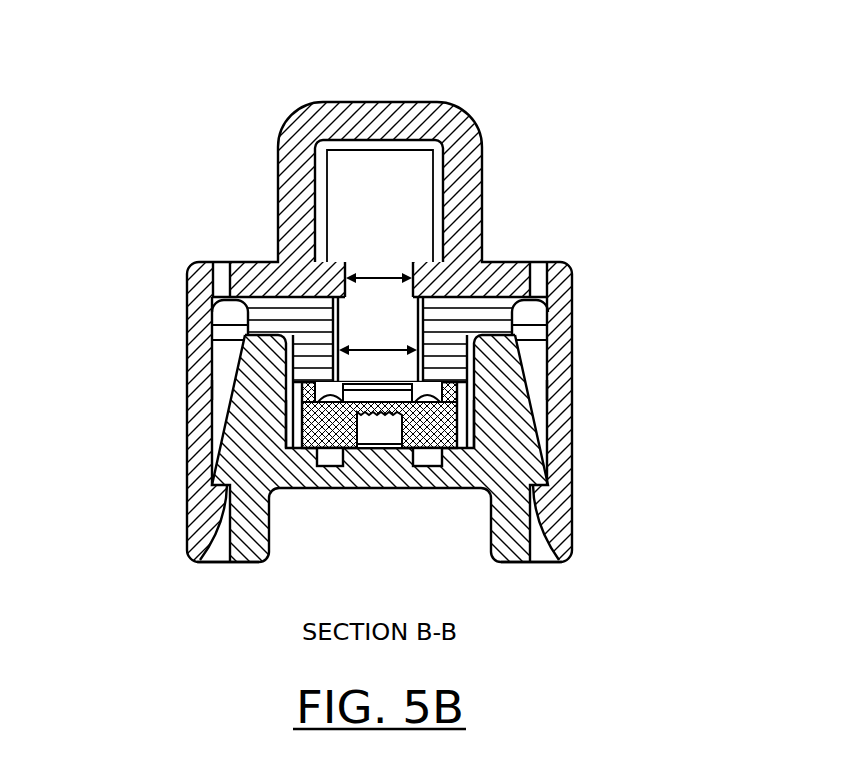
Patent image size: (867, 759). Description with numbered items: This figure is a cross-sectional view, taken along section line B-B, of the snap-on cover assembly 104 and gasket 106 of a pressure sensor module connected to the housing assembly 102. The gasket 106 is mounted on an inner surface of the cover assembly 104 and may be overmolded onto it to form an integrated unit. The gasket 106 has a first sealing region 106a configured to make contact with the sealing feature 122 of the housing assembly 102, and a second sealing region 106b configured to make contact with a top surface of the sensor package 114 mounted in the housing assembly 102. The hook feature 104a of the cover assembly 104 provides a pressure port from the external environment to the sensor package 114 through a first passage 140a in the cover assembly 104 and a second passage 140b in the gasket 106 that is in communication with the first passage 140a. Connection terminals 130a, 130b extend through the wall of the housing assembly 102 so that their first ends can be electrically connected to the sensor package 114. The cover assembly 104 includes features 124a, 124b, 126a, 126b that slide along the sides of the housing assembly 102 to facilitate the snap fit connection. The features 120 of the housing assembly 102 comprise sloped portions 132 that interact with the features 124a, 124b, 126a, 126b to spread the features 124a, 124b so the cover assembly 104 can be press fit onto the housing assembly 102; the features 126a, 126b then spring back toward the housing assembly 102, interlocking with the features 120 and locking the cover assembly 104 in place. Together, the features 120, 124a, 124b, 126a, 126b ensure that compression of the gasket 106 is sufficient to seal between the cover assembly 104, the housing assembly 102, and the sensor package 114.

The housing assembly 102 is at (489, 543).
The cover assembly 104 is at (258, 262).
The hook feature 104a is at (278, 180).
The gasket 106 is at (478, 313).
The first sealing region 106a is at (241, 306).
The second sealing region 106b is at (283, 420).
The sensor package 114 is at (379, 415).
The features 120 is at (228, 488).
The sealing feature 122 is at (252, 359).
The feature 124a is at (573, 325).
The feature 124b is at (187, 325).
The feature 126a is at (573, 515).
The feature 126b is at (187, 515).
The connection terminal 130a is at (437, 467).
The connection terminal 130b is at (323, 467).
The sloped portions 132 is at (223, 388).
The first passage 140a is at (377, 278).
The second passage 140b is at (402, 348).